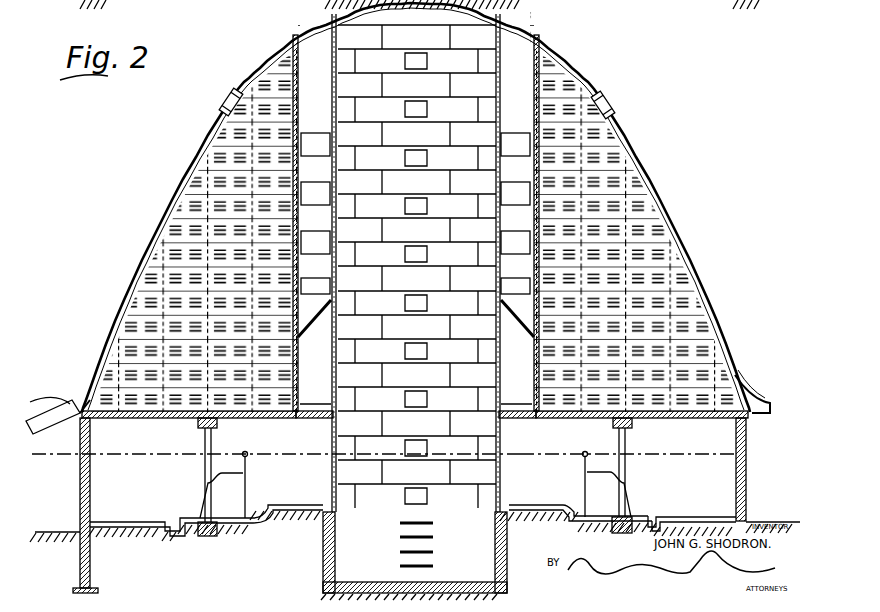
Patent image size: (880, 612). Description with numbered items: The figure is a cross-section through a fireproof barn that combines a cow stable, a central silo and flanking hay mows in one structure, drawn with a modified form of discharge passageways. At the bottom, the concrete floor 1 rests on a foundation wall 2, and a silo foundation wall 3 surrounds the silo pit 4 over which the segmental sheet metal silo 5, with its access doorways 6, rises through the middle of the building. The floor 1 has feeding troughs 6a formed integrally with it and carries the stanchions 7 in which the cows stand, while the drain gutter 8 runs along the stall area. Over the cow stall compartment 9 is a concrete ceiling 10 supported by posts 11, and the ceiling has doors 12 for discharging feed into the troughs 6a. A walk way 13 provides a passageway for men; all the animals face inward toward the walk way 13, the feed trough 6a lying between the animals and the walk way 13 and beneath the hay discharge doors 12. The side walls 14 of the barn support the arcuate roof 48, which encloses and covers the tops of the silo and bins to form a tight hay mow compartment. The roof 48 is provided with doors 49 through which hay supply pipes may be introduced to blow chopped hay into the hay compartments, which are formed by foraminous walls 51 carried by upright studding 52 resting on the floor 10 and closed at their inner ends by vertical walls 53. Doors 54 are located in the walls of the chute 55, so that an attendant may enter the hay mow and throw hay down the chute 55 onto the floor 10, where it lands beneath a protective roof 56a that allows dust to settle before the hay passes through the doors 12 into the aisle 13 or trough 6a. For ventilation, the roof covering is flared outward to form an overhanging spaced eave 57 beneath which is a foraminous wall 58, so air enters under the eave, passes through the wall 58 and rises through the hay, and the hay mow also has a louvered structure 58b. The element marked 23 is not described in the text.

The floor 1 is at (112, 519).
The foundation wall 2 is at (80, 569).
The silo foundation wall 3 is at (324, 560).
The silo pit 4 is at (347, 543).
The segmental sheet metal silo 5 is at (500, 453).
The access doorways 6 is at (427, 207).
The feeding troughs 6a is at (258, 506).
The stanchions 7 is at (200, 490).
The drain gutter 8 is at (170, 518).
The cow stall compartment 9 is at (712, 453).
The ceiling 10 is at (142, 418).
The posts 11 is at (204, 448).
The doors 12 is at (302, 418).
The walk way 13 is at (296, 505).
The side walls 14 is at (80, 480).
The eave bracket 23 is at (66, 402).
The arcuate roof 48 is at (580, 78).
The doors 49 is at (222, 102).
The foraminous walls 51 is at (660, 228).
The upright studding 52 is at (660, 198).
The vertical walls 53 is at (298, 52).
The doors 54 is at (312, 190).
The chute 55 is at (312, 108).
The roof 56a is at (313, 322).
The overhanging spaced eave 57 is at (78, 395).
The foraminous wall 58 is at (62, 421).
The louvered structure 58b is at (415, 392).